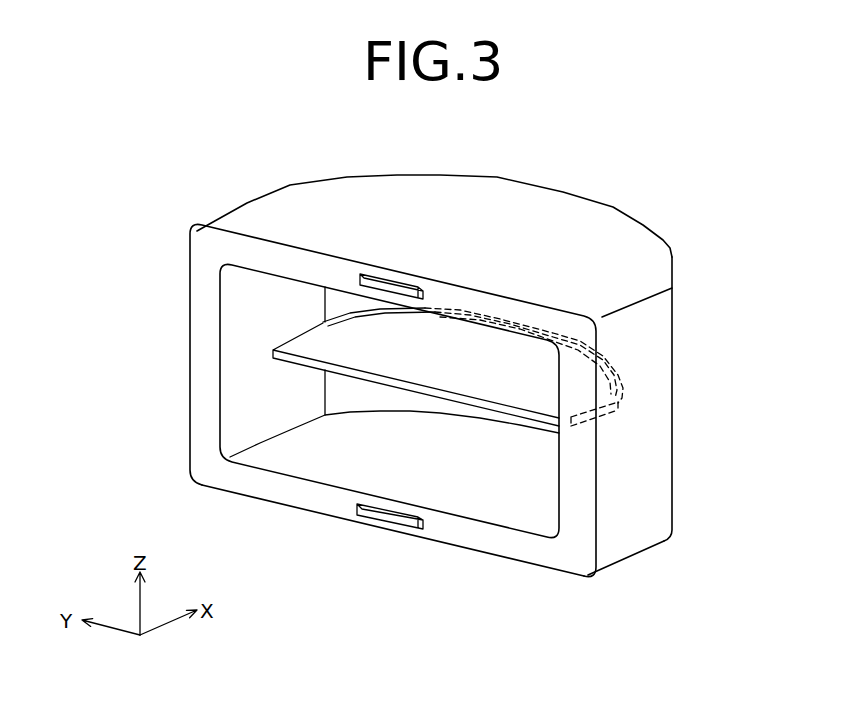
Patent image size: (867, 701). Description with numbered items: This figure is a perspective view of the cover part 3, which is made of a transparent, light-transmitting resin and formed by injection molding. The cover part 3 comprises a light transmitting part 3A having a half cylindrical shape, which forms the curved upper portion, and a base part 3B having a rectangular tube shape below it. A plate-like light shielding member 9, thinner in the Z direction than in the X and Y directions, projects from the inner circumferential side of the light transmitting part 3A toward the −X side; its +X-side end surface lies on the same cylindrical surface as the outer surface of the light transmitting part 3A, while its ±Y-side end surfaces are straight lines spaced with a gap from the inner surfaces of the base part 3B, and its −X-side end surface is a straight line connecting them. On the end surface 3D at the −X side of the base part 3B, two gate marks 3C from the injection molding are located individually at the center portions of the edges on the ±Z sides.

The cover part 3 is at (476, 365).
The light transmitting part 3A is at (661, 238).
The base part 3B is at (637, 420).
The gate marks 3C is at (388, 288).
The end surface 3D is at (521, 545).
The light shielding member 9 is at (378, 355).